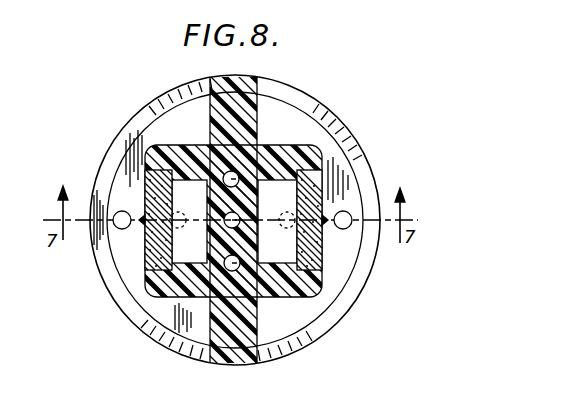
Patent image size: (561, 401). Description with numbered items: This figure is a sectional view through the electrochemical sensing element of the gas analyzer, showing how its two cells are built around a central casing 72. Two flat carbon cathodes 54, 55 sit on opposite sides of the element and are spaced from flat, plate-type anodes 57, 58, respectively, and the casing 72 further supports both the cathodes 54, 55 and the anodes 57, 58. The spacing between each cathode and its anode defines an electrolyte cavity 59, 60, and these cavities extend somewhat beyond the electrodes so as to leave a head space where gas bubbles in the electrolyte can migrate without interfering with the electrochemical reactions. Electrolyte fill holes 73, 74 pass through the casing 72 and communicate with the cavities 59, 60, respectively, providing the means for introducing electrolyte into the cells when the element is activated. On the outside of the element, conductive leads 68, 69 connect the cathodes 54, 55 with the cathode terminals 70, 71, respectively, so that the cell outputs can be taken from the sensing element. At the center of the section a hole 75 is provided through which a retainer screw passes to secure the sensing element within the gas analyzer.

The carbon cathode 54 is at (150, 258).
The carbon cathode 55 is at (317, 254).
The plate-type anode 57 is at (208, 183).
The plate-type anode 58 is at (258, 177).
The electrolyte cavity 59 is at (162, 296).
The electrolyte cavity 60 is at (303, 292).
The conductive lead 68 is at (140, 221).
The conductive lead 69 is at (328, 226).
The cathode terminal 70 is at (118, 214).
The cathode terminal 71 is at (348, 214).
The casing 72 is at (247, 97).
The electrolyte fill hole 73 is at (255, 143).
The electrolyte fill hole 74 is at (260, 288).
The hole 75 is at (228, 218).